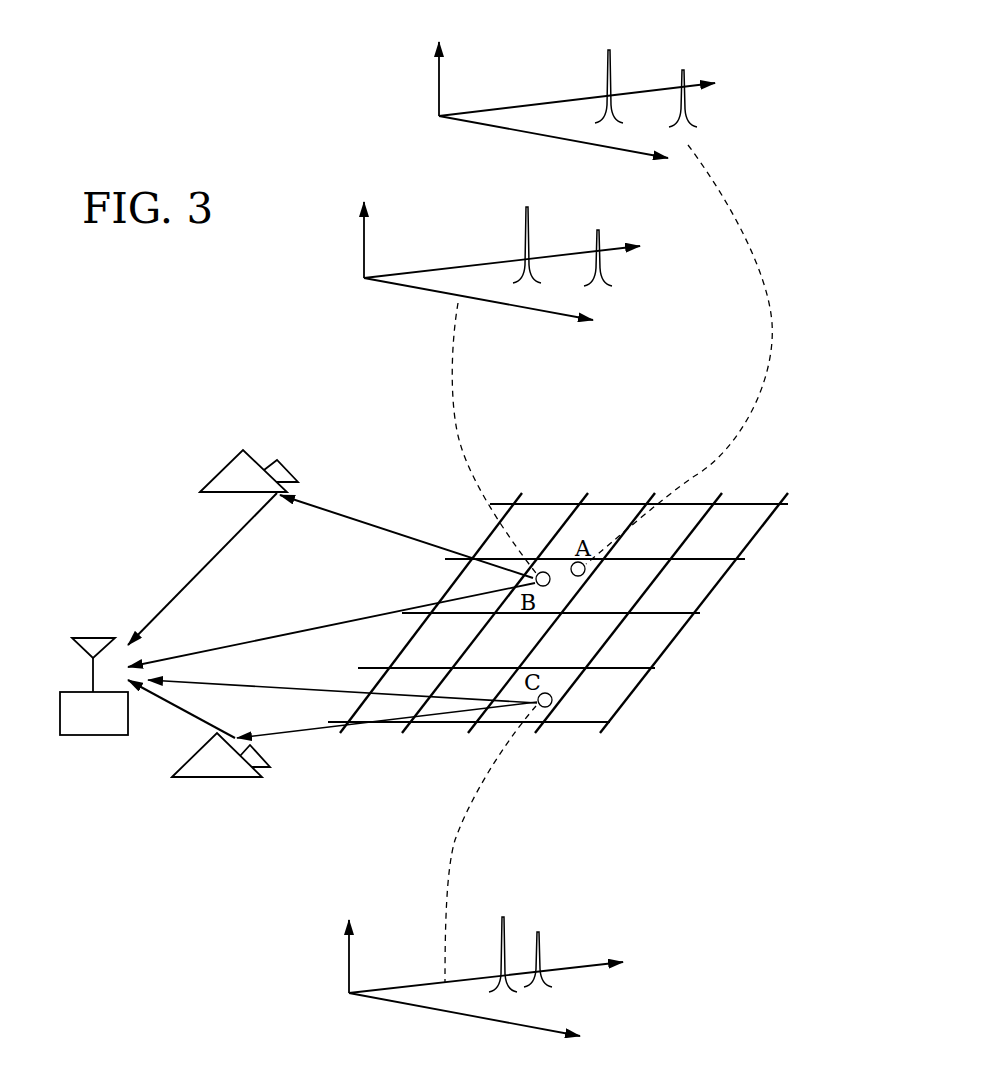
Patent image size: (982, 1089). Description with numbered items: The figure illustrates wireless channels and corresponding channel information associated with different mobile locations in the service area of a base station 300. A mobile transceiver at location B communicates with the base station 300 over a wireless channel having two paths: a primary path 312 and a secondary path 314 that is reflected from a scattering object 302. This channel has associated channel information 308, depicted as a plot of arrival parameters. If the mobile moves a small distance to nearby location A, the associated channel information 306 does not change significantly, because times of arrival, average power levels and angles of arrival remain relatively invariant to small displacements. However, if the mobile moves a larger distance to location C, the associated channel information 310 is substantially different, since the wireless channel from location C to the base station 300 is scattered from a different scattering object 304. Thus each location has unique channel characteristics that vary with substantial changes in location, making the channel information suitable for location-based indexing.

The base station 300 is at (73, 637).
The scattering object 302 is at (233, 452).
The scattering object 304 is at (217, 780).
The channel information 306 is at (730, 116).
The channel information 308 is at (645, 290).
The channel information 310 is at (597, 995).
The primary path 312 is at (348, 620).
The secondary path 314 is at (200, 570).